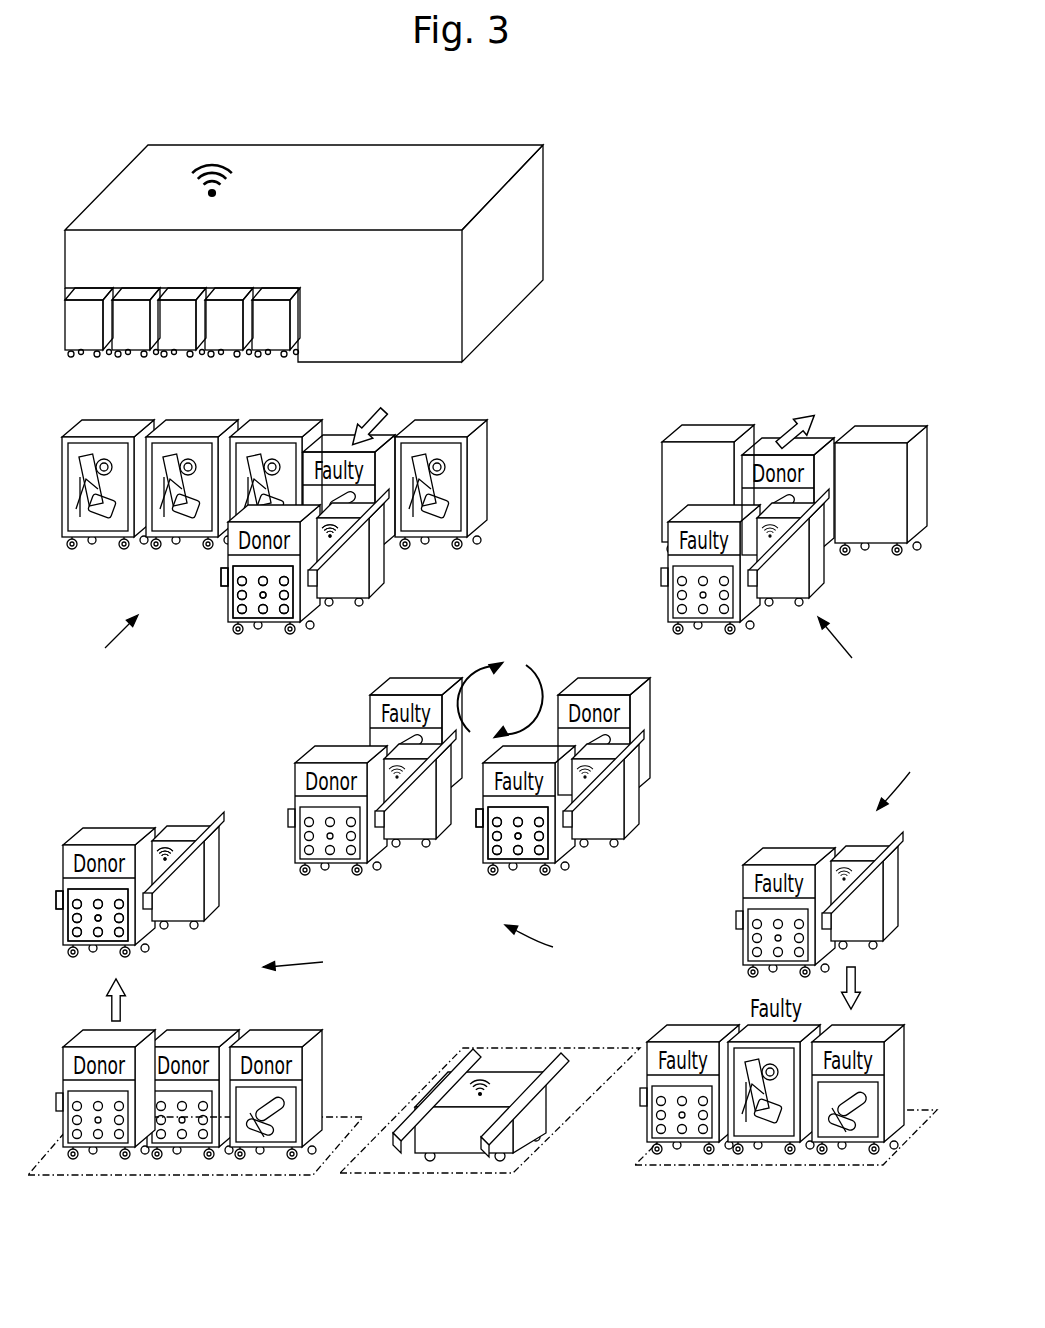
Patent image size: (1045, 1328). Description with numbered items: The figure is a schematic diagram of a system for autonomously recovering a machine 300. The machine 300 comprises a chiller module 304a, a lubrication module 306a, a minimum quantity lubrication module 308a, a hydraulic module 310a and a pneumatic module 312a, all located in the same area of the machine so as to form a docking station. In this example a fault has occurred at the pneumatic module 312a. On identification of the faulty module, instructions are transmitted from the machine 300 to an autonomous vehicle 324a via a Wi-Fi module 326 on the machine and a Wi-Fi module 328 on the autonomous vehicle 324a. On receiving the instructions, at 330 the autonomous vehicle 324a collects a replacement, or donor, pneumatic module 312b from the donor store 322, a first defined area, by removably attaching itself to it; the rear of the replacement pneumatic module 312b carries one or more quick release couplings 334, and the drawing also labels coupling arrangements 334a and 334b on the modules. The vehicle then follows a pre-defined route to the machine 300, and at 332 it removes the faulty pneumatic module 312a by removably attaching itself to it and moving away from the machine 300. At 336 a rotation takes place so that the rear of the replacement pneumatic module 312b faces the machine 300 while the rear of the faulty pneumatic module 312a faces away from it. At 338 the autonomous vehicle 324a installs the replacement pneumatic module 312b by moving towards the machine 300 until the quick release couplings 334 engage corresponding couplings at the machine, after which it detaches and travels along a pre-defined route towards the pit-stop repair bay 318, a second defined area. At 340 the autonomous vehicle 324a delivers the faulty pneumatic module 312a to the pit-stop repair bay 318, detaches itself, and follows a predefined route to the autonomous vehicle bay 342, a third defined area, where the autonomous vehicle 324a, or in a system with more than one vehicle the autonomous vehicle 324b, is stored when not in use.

The machine 300 is at (528, 207).
The chiller module 304a is at (73, 300).
The lubrication module 306a is at (272, 305).
The minimum quantity lubrication (MQL) module 308a is at (128, 300).
The hydraulic module 310a is at (177, 300).
The pneumatic module 312a is at (226, 302).
The replacement pneumatic module 312b is at (236, 557).
The pit-stop repair bay 318 is at (768, 1166).
The donor store 322 is at (249, 1176).
The autonomous vehicle 324a is at (346, 573).
The autonomous vehicle 324b is at (446, 1088).
The Wi-Fi module 326 is at (213, 162).
The Wi-Fi module 328 is at (334, 541).
The step of collecting the replacement pneumatic module 330 is at (313, 964).
The step of removing the faulty pneumatic module 332 is at (114, 647).
The quick release couplings 334 is at (92, 937).
The component panel 334a is at (266, 618).
The component panel 334b is at (533, 843).
The step of rotating 336 is at (550, 940).
The step of installing the replacement pneumatic module 338 is at (841, 651).
The step of delivering the faulty pneumatic module 340 is at (899, 779).
The autonomous vehicle bay 342 is at (576, 1047).